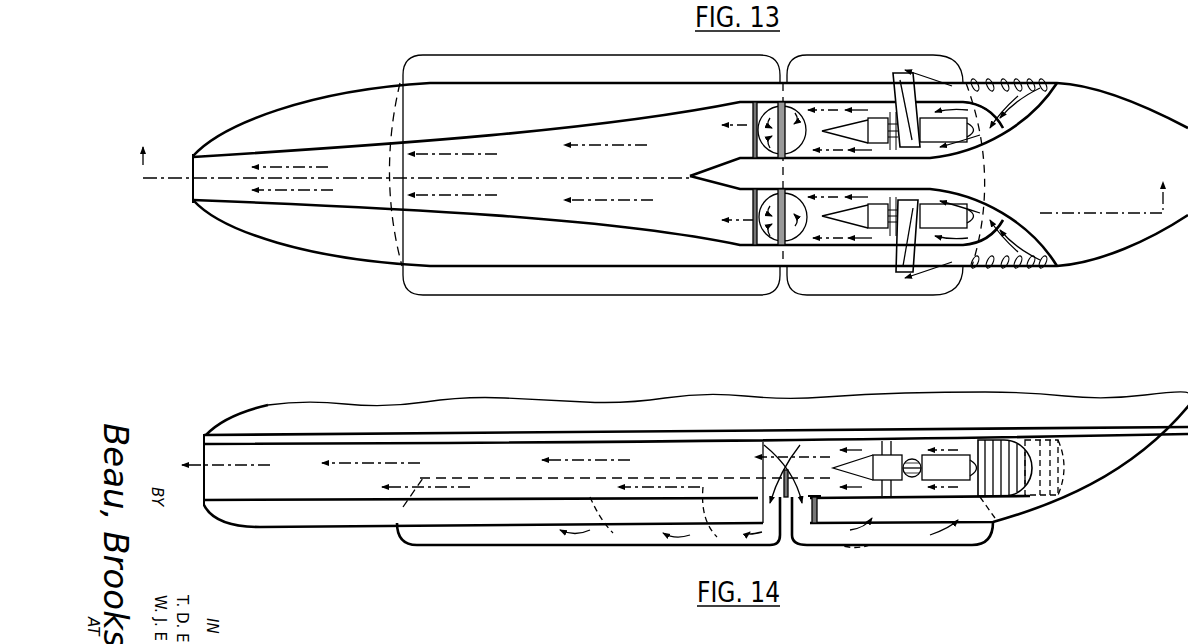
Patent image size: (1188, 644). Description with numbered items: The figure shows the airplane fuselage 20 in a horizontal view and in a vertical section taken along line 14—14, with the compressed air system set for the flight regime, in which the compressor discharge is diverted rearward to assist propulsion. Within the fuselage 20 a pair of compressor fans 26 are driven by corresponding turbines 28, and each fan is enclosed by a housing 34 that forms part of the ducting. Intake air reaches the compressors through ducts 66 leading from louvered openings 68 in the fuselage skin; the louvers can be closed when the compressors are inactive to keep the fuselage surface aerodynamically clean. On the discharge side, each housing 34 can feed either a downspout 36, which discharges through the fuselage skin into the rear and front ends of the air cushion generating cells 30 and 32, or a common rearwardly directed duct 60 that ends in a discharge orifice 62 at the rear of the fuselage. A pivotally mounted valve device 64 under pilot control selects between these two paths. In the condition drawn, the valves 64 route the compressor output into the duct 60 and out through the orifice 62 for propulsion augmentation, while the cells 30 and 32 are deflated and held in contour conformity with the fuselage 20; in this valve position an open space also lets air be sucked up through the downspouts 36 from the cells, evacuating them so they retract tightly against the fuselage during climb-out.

In FIG. 13, the section line 14— 14 is at (654, 169).
In FIG. 13, the fuselage 20 is at (1085, 82).
In FIG. 14, the fuselage 20 is at (1015, 392).
In FIG. 13, the compressor fan 26 is at (884, 138).
In FIG. 14, the compressor fan 26 is at (891, 474).
In FIG. 13, the turbine 28 is at (950, 136).
In FIG. 14, the turbine 28 is at (954, 474).
In FIG. 13, the air cushion generating cell 30 is at (905, 297).
In FIG. 14, the air cushion generating cell 30 is at (958, 547).
In FIG. 13, the air cushion generating cell 32 is at (636, 298).
In FIG. 14, the air cushion generating cell 32 is at (575, 548).
In FIG. 13, the housing 34 is at (867, 159).
In FIG. 13, the downspout 36 is at (754, 133).
In FIG. 14, the downspout 36 is at (830, 509).
In FIG. 13, the rearwardly directed duct 60 is at (522, 134).
In FIG. 14, the rearwardly directed duct 60 is at (657, 440).
In FIG. 13, the discharge orifice 62 is at (193, 195).
In FIG. 14, the discharge orifice 62 is at (204, 490).
In FIG. 13, the valve device 64 is at (802, 138).
In FIG. 14, the valve device 64 is at (762, 443).
In FIG. 13, the intake duct 66 is at (1038, 118).
In FIG. 13, the louvered opening 68 is at (1003, 80).
In FIG. 14, the louvered opening 68 is at (1036, 488).